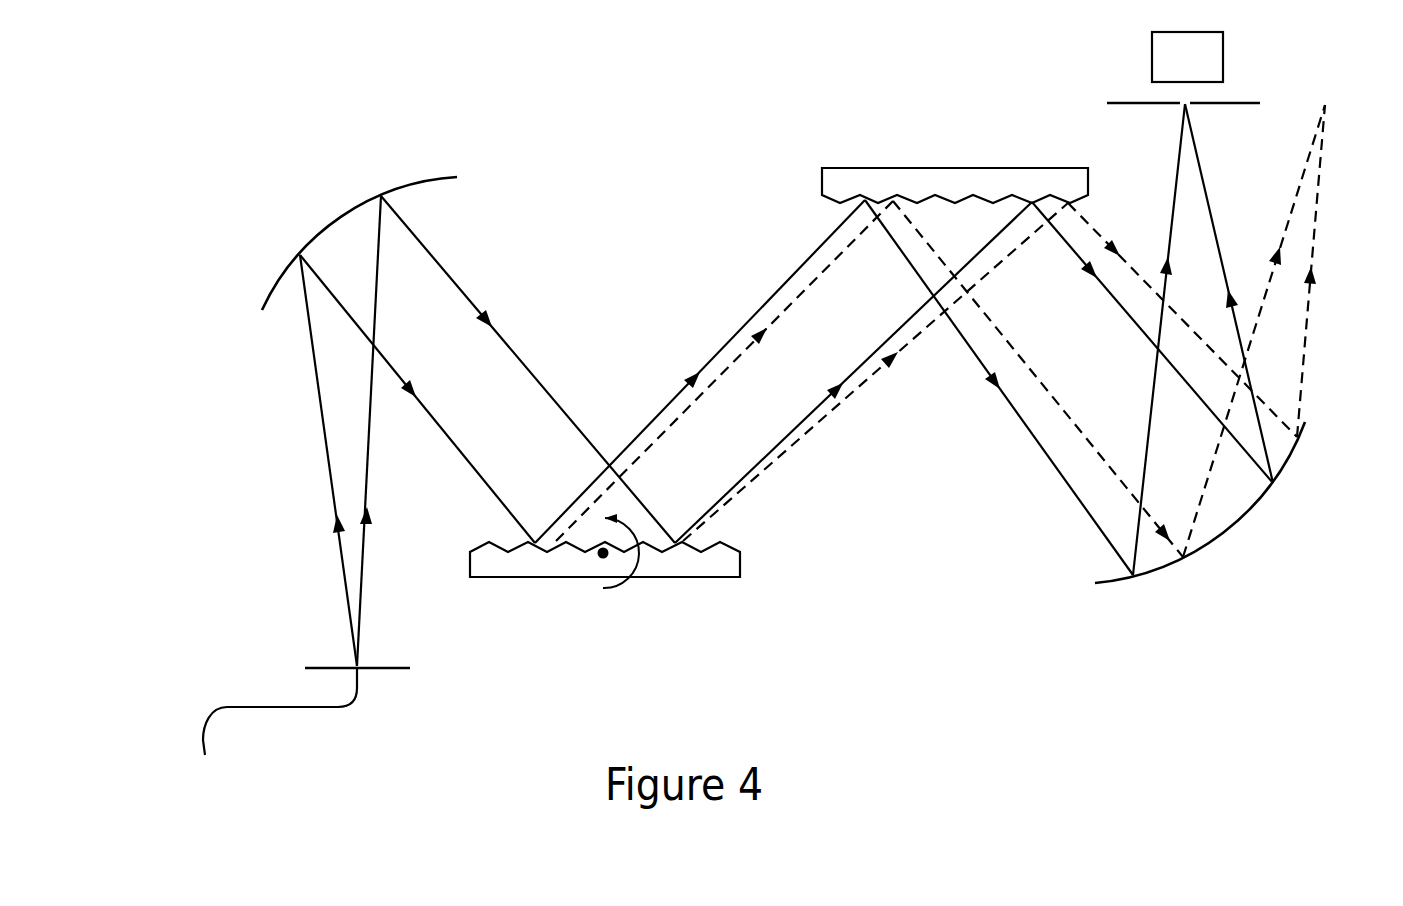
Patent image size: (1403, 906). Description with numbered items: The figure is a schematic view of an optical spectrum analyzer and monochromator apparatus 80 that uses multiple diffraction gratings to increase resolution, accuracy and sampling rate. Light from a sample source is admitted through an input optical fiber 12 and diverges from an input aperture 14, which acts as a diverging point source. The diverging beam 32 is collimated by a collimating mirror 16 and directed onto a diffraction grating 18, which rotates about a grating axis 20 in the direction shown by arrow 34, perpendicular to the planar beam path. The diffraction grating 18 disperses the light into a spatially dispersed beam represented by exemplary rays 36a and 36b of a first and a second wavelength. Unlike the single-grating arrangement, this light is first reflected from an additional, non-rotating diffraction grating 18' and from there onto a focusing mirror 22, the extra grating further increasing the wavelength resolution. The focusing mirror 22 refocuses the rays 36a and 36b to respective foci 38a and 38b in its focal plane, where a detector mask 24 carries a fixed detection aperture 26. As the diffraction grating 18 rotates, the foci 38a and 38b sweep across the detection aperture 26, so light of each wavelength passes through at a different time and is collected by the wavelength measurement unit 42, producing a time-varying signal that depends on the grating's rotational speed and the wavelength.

The input optical fiber 12 is at (243, 707).
The input aperture 14 is at (357, 662).
The collimating mirror 16 is at (338, 219).
The diffraction grating 18 is at (605, 589).
The additional diffraction grating 18' is at (955, 161).
The grating axis 20 is at (598, 556).
The focusing mirror 22 is at (1153, 577).
The detector mask 24 is at (1120, 102).
The detection aperture 26 is at (1190, 96).
The diverging beam 32 is at (327, 461).
The arrow indicating grating rotation direction 34 is at (620, 586).
The ray of first wavelength 36a is at (778, 294).
The ray of second wavelength 36b is at (727, 346).
The focus of first wavelength 38a is at (1184, 105).
The focus of second wavelength 38b is at (1335, 105).
The wavelength measurement unit 42 is at (1202, 70).
The optical spectrum analyzer and monochromator apparatus 80 is at (582, 107).